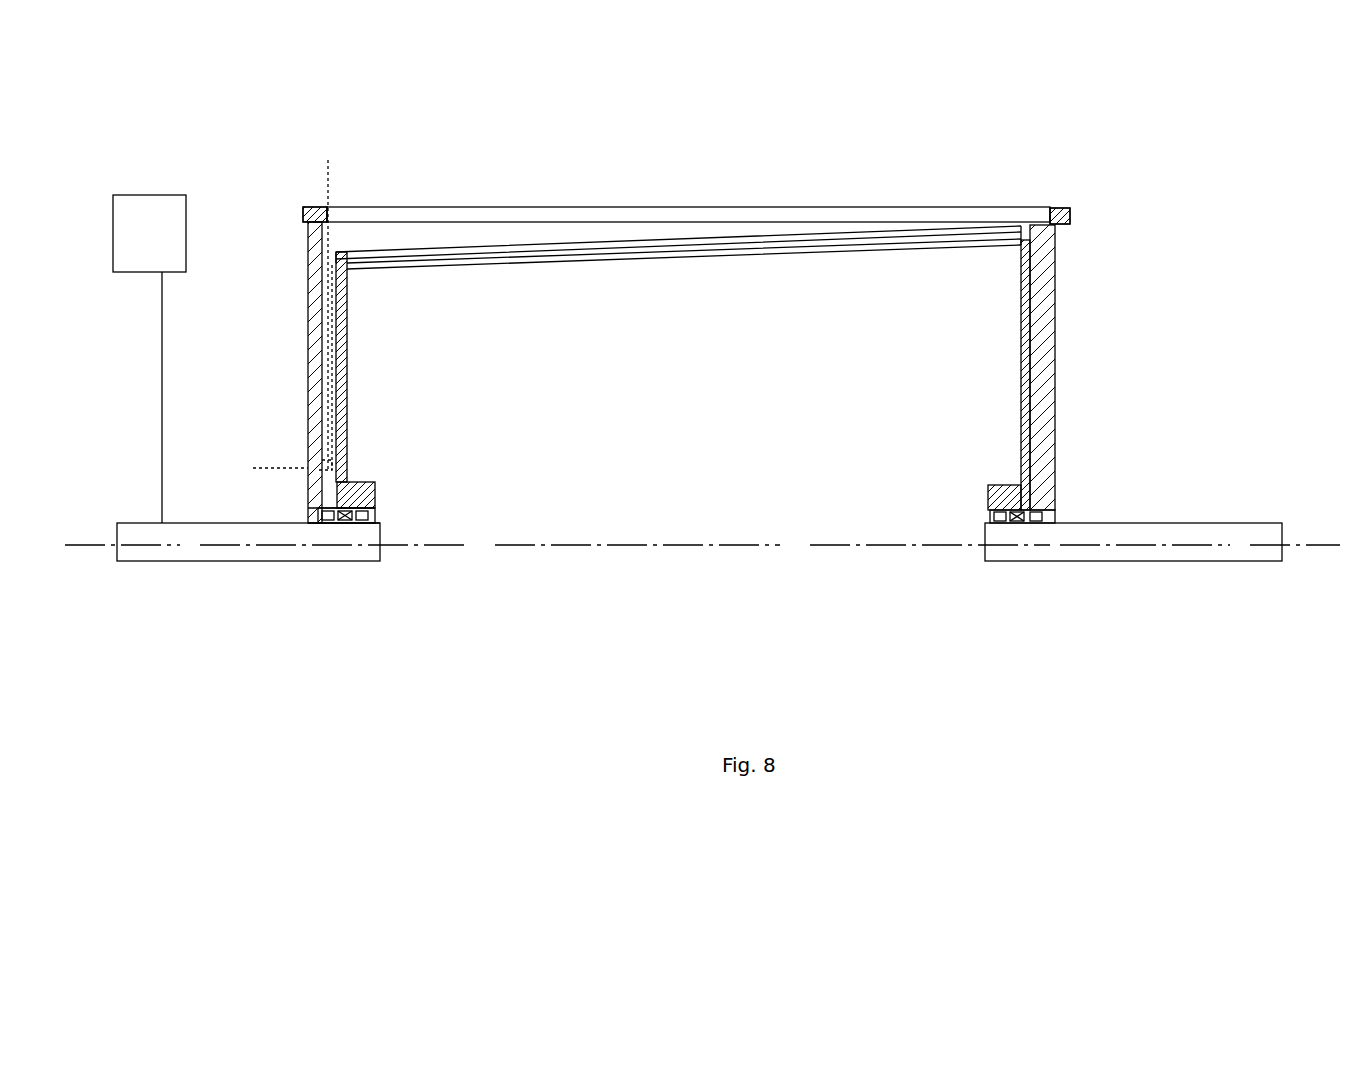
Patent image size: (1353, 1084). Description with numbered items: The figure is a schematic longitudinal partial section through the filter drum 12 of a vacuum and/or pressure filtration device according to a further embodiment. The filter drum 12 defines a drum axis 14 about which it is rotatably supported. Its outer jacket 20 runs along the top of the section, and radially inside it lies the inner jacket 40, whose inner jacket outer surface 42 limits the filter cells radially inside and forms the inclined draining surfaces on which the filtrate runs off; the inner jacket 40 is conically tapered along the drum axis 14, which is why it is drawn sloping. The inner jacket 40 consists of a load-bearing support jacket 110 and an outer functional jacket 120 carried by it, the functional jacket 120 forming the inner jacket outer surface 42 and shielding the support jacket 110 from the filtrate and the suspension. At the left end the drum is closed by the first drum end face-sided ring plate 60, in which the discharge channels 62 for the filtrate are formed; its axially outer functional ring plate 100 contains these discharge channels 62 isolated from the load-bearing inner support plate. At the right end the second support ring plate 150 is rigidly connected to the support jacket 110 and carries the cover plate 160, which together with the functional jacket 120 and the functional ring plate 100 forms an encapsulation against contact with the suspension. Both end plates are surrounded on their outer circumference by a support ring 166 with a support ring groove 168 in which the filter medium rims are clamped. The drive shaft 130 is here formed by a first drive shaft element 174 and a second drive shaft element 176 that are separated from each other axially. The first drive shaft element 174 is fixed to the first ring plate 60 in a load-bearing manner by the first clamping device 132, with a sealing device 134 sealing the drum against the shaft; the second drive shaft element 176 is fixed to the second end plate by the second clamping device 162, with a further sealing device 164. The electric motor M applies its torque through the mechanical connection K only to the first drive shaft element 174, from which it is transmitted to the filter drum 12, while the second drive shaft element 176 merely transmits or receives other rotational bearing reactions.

The drive M is at (145, 205).
The mechanical connection K is at (162, 355).
The filter drum 12 is at (462, 192).
The drum axis 14 is at (1298, 545).
The outer jacket 20 is at (712, 207).
The inner jacket 40 is at (978, 240).
The inner jacket outer surface 42 is at (852, 232).
The first drum end face-sided ring plate 60 is at (316, 300).
The discharge channels 62 is at (325, 418).
The functional ring plate 100 is at (318, 360).
The support jacket 110 is at (688, 255).
The outer functional jacket 120 is at (628, 245).
The drive shaft 130 is at (240, 561).
The first clamping device 132 is at (352, 515).
The sealing device 134 is at (316, 513).
The second support ring plate 150 is at (1025, 415).
The cover plate 160 is at (1045, 412).
The second clamping device 162 is at (990, 513).
The sealing device 164 is at (1045, 515).
The support ring 166 is at (302, 214).
The support ring groove 168 is at (312, 207).
The first drive shaft element 174 is at (130, 561).
The second drive shaft element 176 is at (1090, 561).